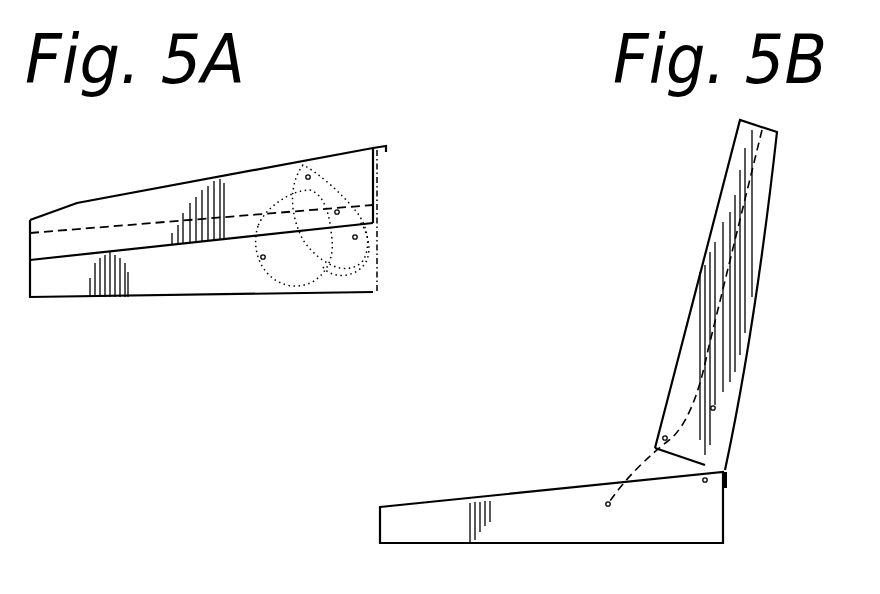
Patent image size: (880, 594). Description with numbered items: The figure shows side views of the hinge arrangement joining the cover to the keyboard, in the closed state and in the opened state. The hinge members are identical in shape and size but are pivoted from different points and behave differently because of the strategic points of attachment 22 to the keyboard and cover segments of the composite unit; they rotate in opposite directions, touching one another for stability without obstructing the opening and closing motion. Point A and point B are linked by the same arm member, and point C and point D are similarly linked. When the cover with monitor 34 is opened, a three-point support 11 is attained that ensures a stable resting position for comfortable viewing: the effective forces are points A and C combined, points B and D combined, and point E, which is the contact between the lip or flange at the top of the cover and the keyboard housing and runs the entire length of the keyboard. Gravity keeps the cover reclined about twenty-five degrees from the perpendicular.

In FIG. 5A, the points of attachment 22 is at (310, 177).
In FIG. 5B, the cover with monitor in opened position 34 is at (733, 215).
In FIG. 5B, the three-point support 11 is at (705, 481).
In FIG. 5A, the point A is at (229, 296).
In FIG. 5B, the point A is at (713, 408).
In FIG. 5A, the point B is at (358, 239).
In FIG. 5B, the point B is at (727, 468).
In FIG. 5A, the point C is at (340, 212).
In FIG. 5B, the point C is at (665, 438).
In FIG. 5A, the point D is at (229, 296).
In FIG. 5B, the point D is at (588, 486).
In FIG. 5B, the point E is at (727, 488).